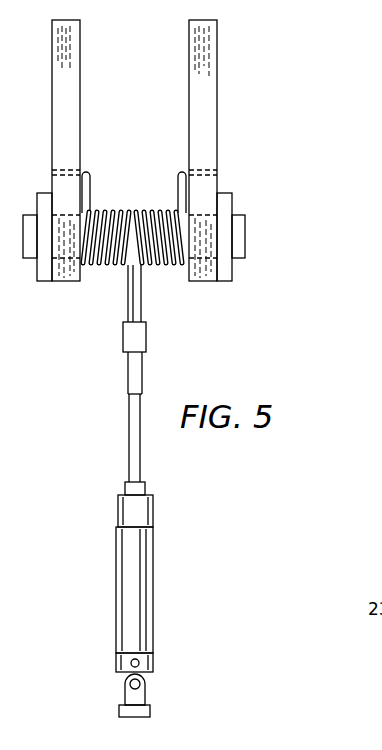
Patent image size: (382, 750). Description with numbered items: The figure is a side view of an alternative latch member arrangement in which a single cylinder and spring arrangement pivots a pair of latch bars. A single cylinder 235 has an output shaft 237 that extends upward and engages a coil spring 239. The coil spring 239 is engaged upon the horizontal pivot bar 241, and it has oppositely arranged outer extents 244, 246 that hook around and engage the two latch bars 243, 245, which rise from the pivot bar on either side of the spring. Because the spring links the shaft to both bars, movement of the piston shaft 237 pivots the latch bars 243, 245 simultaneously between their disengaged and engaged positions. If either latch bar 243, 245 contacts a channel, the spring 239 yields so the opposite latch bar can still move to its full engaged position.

The cylinder 235 is at (153, 541).
The output shaft 237 is at (140, 452).
The coil spring 239 is at (168, 242).
The horizontal pivot bar 241 is at (245, 236).
The latch bar 243 is at (212, 58).
The outer extent 244 is at (190, 184).
The latch bar 245 is at (65, 73).
The outer extent 246 is at (88, 172).